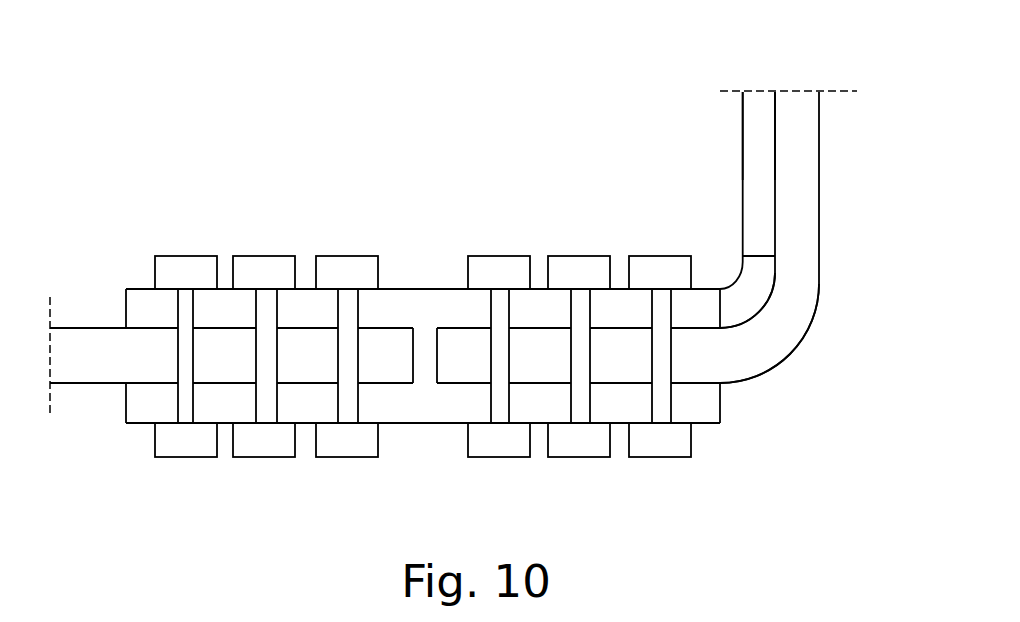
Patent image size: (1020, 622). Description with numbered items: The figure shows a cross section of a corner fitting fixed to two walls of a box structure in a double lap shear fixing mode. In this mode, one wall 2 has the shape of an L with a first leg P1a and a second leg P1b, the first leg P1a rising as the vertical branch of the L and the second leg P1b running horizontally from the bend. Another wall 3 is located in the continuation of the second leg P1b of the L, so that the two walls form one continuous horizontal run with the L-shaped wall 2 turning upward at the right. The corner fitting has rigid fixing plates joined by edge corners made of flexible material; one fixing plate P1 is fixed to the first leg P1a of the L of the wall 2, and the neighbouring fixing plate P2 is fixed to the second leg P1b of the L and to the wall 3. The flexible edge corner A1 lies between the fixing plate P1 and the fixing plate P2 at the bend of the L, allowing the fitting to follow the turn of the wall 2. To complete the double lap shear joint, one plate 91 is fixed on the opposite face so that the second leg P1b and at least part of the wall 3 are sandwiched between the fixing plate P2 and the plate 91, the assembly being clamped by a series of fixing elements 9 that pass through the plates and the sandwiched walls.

The fixing element 9 is at (188, 266).
The plate 91 is at (429, 404).
The fixing plate P2 is at (411, 302).
The second leg P1b is at (616, 357).
The wall 3 is at (108, 358).
The wall 2 is at (800, 227).
The fixing plate P1 is at (758, 158).
The first leg P1a is at (797, 118).
The edge corner A1 is at (765, 302).